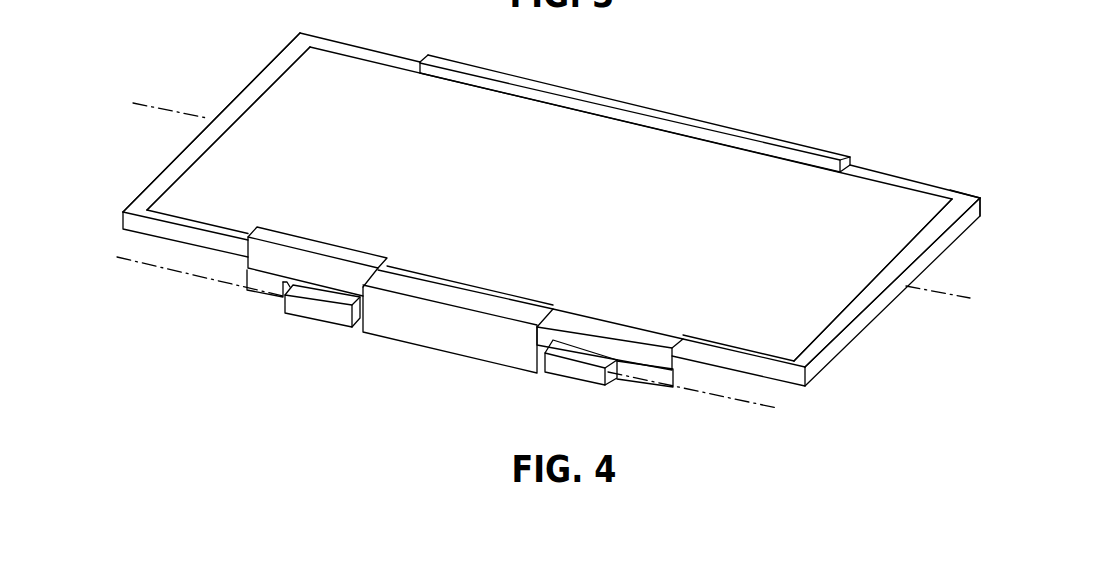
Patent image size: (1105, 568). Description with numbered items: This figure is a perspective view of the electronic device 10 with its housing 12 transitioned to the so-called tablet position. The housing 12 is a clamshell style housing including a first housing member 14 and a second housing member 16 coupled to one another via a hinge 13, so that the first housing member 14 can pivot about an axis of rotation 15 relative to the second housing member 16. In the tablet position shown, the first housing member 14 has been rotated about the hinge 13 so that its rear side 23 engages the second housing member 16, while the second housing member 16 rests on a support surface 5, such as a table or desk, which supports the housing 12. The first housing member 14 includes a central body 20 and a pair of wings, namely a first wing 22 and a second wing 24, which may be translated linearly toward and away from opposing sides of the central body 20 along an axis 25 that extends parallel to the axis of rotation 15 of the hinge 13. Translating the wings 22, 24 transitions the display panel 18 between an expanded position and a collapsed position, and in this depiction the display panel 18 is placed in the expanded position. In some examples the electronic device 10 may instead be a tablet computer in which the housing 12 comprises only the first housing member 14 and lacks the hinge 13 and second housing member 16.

The support surface 5 is at (79, 180).
The electronic device 10 is at (970, 66).
The housing 12 is at (1015, 215).
The hinge 13 is at (355, 333).
The first housing member 14 is at (673, 393).
The axis of rotation 15 is at (203, 281).
The second housing member 16 is at (282, 50).
The display panel 18 is at (898, 233).
The central body 20 is at (843, 155).
The first wing 22 is at (363, 48).
The rear side 23 is at (793, 392).
The second wing 24 is at (956, 193).
The axis 25 is at (974, 299).